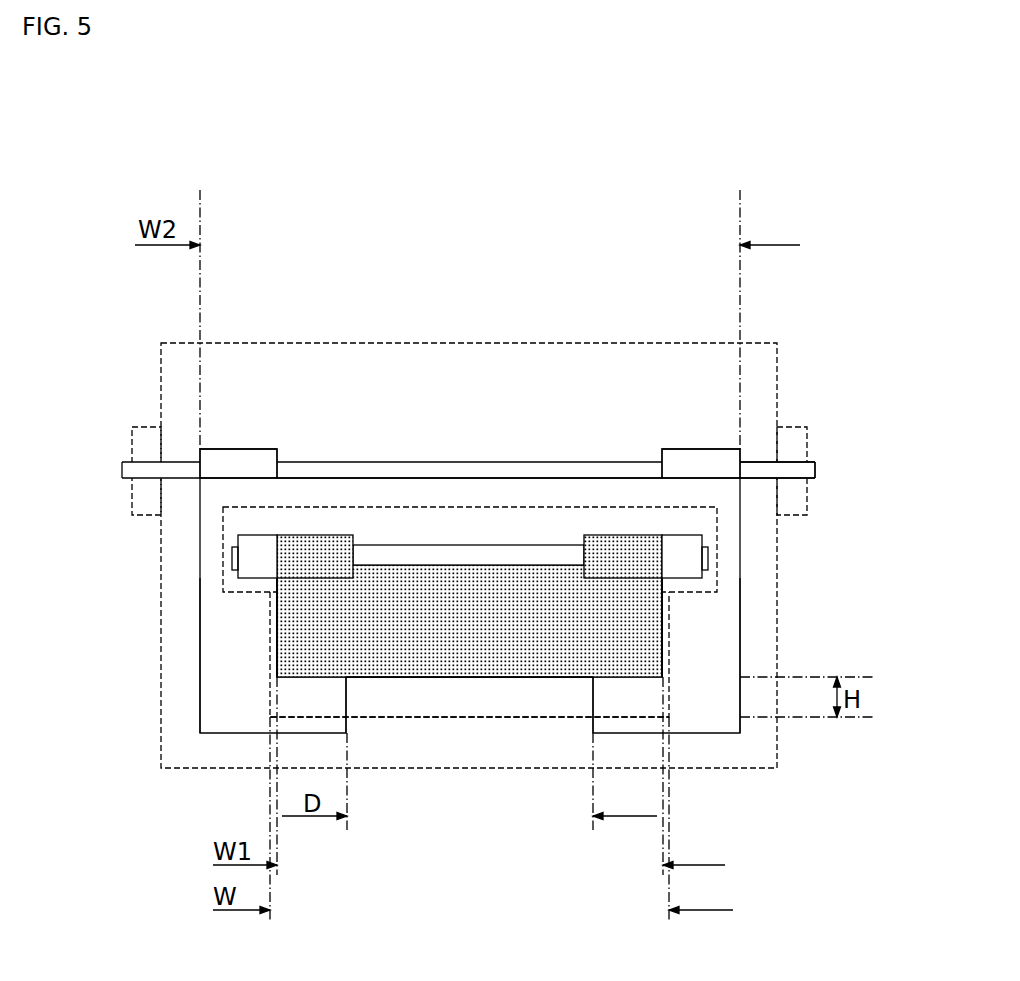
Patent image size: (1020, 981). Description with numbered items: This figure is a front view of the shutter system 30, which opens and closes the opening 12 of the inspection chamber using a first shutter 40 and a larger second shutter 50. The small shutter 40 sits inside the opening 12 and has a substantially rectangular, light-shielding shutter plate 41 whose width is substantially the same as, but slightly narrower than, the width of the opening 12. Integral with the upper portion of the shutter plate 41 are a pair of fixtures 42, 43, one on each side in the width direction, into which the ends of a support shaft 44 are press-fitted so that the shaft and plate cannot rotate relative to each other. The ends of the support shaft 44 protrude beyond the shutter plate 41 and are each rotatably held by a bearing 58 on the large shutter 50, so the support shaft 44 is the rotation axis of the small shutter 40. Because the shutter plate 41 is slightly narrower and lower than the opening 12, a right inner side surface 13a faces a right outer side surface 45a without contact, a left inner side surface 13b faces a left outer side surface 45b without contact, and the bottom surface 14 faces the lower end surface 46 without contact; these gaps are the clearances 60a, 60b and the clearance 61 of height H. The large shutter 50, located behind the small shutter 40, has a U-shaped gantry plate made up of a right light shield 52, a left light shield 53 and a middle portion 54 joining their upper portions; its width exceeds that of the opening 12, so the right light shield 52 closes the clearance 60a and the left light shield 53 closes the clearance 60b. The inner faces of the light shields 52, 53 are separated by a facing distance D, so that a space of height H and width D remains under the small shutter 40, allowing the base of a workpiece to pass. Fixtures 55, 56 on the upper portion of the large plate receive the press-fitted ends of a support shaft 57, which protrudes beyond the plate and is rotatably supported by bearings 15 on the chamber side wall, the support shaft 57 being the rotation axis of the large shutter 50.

The shutter system 30 is at (124, 100).
The opening 12 is at (493, 507).
The right inner side surface 13a is at (667, 655).
The left inner side surface 13b is at (273, 655).
The bottom surface 14 is at (425, 712).
The bearing 15 is at (143, 427).
The first shutter 40 is at (447, 687).
The shutter plate 41 is at (488, 637).
The fixture 42 is at (644, 533).
The fixture 43 is at (297, 535).
The support shaft 44 is at (709, 557).
The right outer side surface 45a is at (662, 623).
The left outer side surface 45b is at (277, 623).
The lower end surface 46 is at (483, 678).
The second shutter 50 is at (548, 455).
The right light shield 52 is at (723, 668).
The left light shield 53 is at (243, 666).
The middle portion 54 is at (406, 478).
The fixture 55 is at (696, 449).
The fixture 56 is at (238, 449).
The support shaft 57 is at (820, 470).
The bearing 58 is at (258, 535).
The clearance 60a is at (662, 640).
The clearance 60b is at (277, 640).
The clearance 61 is at (543, 708).